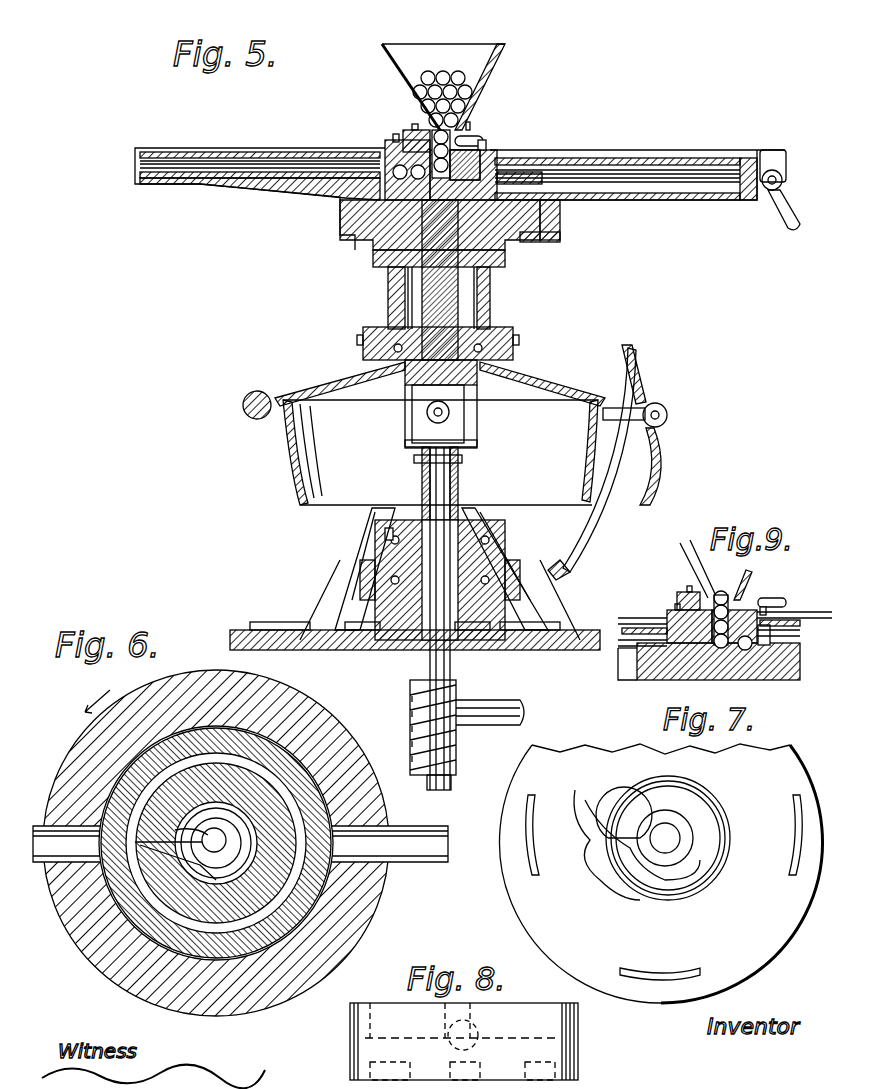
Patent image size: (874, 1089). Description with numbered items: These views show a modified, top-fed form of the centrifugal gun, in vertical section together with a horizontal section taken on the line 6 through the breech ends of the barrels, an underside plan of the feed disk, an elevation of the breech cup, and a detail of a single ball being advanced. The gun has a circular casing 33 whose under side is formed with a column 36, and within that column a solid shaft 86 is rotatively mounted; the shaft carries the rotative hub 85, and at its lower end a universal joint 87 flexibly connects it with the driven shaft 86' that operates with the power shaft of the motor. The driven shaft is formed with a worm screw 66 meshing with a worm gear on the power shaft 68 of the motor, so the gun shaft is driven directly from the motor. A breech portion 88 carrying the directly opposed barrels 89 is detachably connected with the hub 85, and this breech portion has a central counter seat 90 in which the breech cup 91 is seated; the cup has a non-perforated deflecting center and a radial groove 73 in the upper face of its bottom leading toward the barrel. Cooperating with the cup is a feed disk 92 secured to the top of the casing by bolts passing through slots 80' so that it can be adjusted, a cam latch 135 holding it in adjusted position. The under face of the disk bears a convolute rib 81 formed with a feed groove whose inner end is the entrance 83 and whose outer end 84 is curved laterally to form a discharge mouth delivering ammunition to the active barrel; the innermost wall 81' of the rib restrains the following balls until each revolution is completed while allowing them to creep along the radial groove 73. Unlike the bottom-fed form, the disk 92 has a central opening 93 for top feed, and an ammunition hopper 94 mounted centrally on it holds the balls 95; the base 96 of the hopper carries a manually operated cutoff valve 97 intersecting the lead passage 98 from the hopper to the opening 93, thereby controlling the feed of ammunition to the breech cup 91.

In FIG. 5, the section line 6 is at (335, 133).
In FIG. 5, the circular casing 33 is at (614, 200).
In FIG. 5, the column 36 is at (492, 304).
In FIG. 5, the worm screw 66 is at (412, 702).
In FIG. 5, the power shaft 68 is at (500, 716).
In FIG. 9, the radial groove 73 is at (770, 660).
In FIG. 7, the slots 80' is at (671, 959).
In FIG. 6, the convolute rib 81 is at (247, 843).
In FIG. 7, the convolute rib 81 is at (689, 841).
In FIG. 6, the innermost wall 81' is at (200, 828).
In FIG. 7, the innermost wall 81' is at (634, 874).
In FIG. 7, the entrance 83 is at (620, 805).
In FIG. 7, the outer end 84 is at (580, 830).
In FIG. 5, the rotative hub 85 is at (512, 184).
In FIG. 5, the solid shaft 86 is at (461, 280).
In FIG. 5, the driven shaft 86' is at (374, 618).
In FIG. 5, the universal joint 87 is at (410, 412).
In FIG. 5, the breech portion 88 is at (522, 196).
In FIG. 9, the breech portion 88 is at (680, 678).
In FIG. 5, the barrels 89 is at (240, 172).
In FIG. 6, the barrels 89 is at (68, 852).
In FIG. 9, the barrels 89 is at (816, 616).
In FIG. 5, the central counter seat 90 is at (492, 160).
In FIG. 9, the central counter seat 90 is at (735, 660).
In FIG. 5, the breech cup 91 is at (472, 146).
In FIG. 6, the breech cup 91 is at (178, 752).
In FIG. 8, the breech cup 91 is at (578, 1056).
In FIG. 9, the breech cup 91 is at (640, 670).
In FIG. 5, the feed disk 92 is at (378, 156).
In FIG. 6, the feed disk 92 is at (308, 992).
In FIG. 7, the feed disk 92 is at (771, 839).
In FIG. 9, the feed disk 92 is at (666, 614).
In FIG. 5, the central opening 93 is at (404, 132).
In FIG. 6, the central opening 93 is at (238, 866).
In FIG. 8, the central opening 93 is at (470, 1028).
In FIG. 9, the central opening 93 is at (700, 592).
In FIG. 5, the ammunition hopper 94 is at (438, 62).
In FIG. 9, the ammunition hopper 94 is at (690, 568).
In FIG. 5, the balls 95 is at (476, 98).
In FIG. 9, the balls 95 is at (748, 590).
In FIG. 5, the base 96 is at (465, 150).
In FIG. 9, the base 96 is at (752, 598).
In FIG. 5, the cutoff valve 97 is at (482, 152).
In FIG. 9, the cutoff valve 97 is at (766, 606).
In FIG. 5, the lead passage 98 is at (462, 128).
In FIG. 5, the cam latch 135 is at (768, 196).